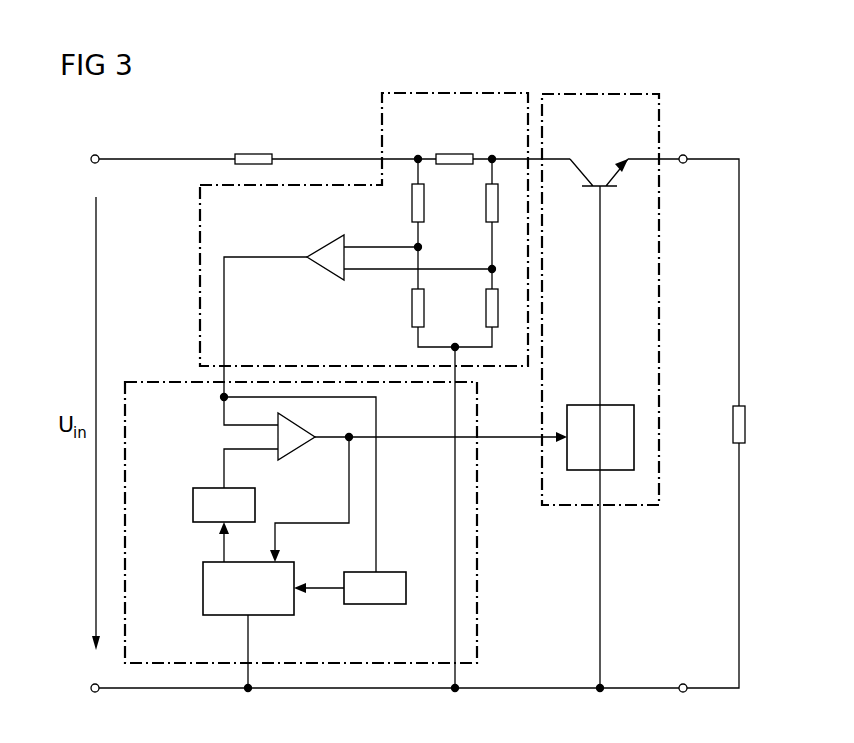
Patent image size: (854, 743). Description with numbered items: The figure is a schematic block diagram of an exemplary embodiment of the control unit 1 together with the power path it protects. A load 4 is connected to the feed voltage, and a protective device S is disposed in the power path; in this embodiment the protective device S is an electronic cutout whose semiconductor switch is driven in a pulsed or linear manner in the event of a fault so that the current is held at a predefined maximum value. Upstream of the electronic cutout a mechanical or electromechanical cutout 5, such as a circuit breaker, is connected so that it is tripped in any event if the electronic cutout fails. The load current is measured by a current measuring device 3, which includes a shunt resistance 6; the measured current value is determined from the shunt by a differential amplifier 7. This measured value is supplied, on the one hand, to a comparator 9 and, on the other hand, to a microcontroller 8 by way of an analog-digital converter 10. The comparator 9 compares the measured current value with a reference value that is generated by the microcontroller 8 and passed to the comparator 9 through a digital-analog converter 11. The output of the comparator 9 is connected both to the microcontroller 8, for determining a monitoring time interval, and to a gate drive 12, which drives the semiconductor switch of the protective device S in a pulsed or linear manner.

The control unit 1 is at (172, 381).
The current measuring device 3 is at (462, 92).
The load 4 is at (733, 422).
The mechanical or electromechanical cutout 5 is at (252, 154).
The shunt resistance 6 is at (450, 154).
The differential amplifier 7 is at (326, 246).
The microcontroller 8 is at (203, 591).
The comparator 9 is at (298, 452).
The analog-digital converter 10 is at (376, 604).
The digital-analog converter 11 is at (193, 506).
The gate drive 12 is at (614, 404).
The protective device S is at (598, 93).